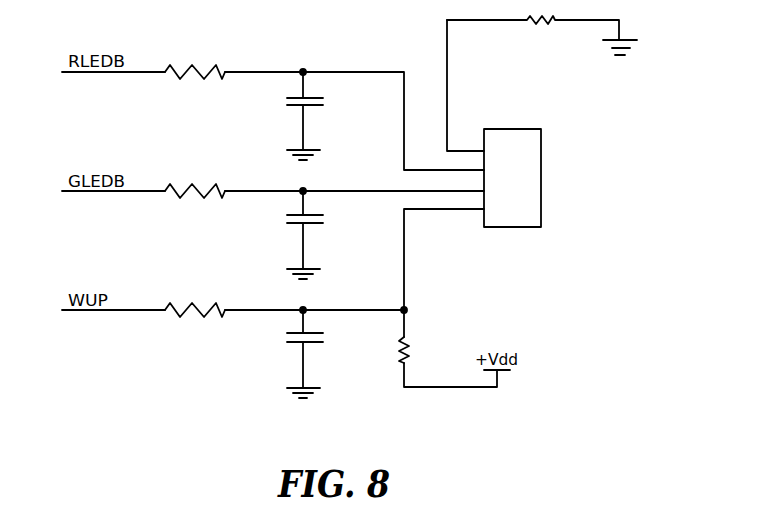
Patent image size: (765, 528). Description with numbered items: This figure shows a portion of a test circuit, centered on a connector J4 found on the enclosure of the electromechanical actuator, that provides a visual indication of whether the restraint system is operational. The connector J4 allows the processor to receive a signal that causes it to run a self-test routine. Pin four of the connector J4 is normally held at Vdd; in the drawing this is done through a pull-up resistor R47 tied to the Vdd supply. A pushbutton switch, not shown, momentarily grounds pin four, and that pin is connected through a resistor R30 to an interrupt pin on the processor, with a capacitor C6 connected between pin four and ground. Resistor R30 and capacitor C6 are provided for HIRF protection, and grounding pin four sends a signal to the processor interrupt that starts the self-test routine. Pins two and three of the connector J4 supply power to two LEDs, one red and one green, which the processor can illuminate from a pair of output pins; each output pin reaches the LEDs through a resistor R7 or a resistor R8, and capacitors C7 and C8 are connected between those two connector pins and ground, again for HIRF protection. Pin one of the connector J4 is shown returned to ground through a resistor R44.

The resistor R7 is at (195, 75).
The resistor R8 is at (195, 195).
The resistor R30 is at (195, 314).
The resistor R44 (200 ohm) R44 is at (542, 27).
The resistor R47 (75K) R47 is at (421, 348).
The capacitor C7 is at (328, 116).
The capacitor C8 is at (328, 235).
The capacitor C6 is at (328, 354).
The connector J4 (70553-0003) J4 is at (548, 147).